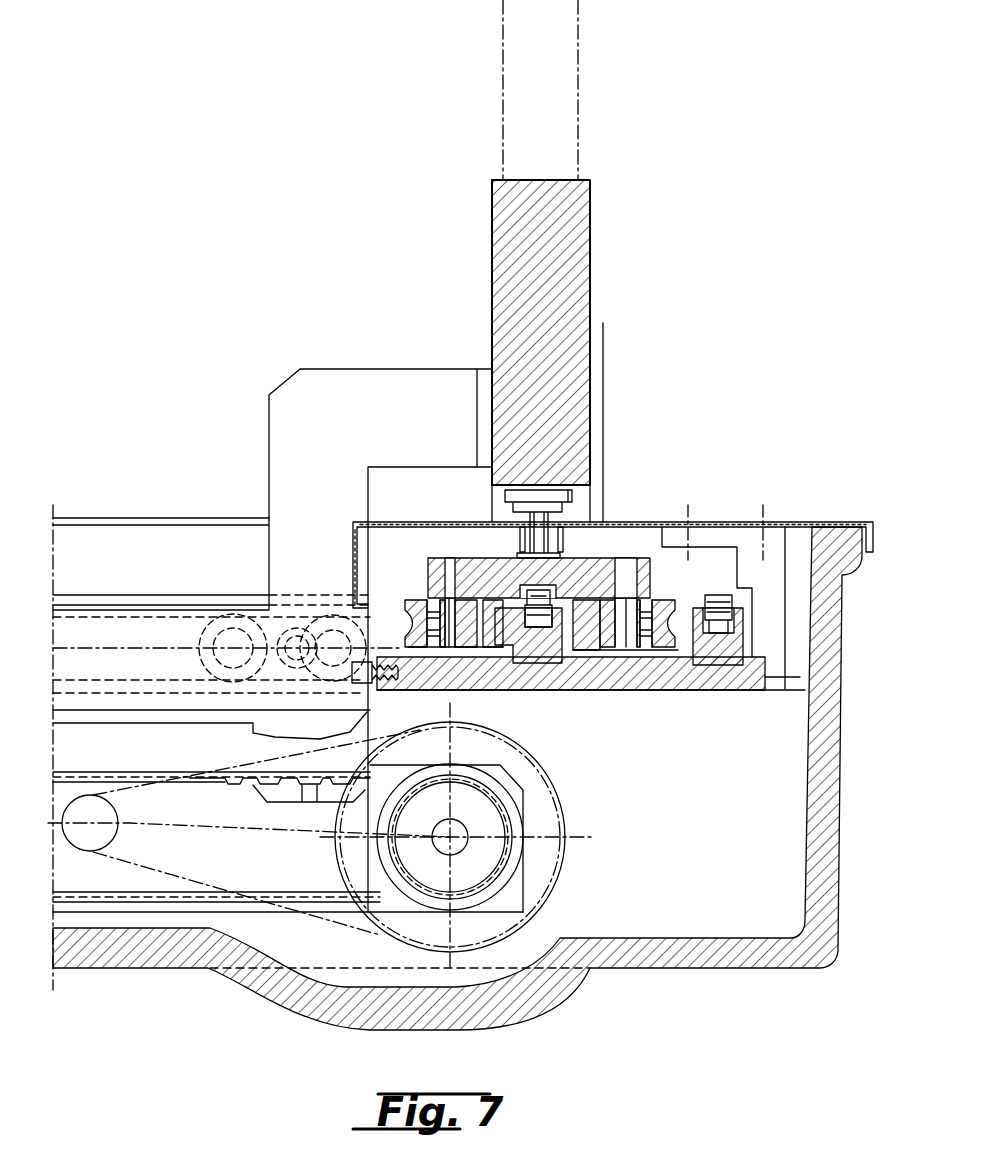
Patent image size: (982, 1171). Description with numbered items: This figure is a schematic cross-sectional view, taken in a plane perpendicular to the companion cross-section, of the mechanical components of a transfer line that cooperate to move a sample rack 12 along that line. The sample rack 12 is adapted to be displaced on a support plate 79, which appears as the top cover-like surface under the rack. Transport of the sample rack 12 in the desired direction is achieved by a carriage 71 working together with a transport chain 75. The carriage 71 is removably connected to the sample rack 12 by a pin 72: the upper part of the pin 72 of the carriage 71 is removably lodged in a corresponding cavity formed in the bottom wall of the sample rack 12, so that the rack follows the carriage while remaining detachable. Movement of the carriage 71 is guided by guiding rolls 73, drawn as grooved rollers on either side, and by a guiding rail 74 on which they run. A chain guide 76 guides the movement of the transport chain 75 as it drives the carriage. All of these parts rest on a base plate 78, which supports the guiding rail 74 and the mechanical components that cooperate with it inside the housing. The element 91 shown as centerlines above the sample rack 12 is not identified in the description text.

The drive shaft 91 is at (566, 42).
The sample rack 12 is at (582, 255).
The support plate 79 is at (436, 520).
The pin 72 is at (550, 488).
The carriage 71 is at (592, 560).
The transport chain 75 is at (540, 600).
The guiding rolls 73 is at (412, 600).
The guiding rail 74 is at (548, 690).
The base plate 78 is at (660, 692).
The chain guide 76 is at (718, 662).